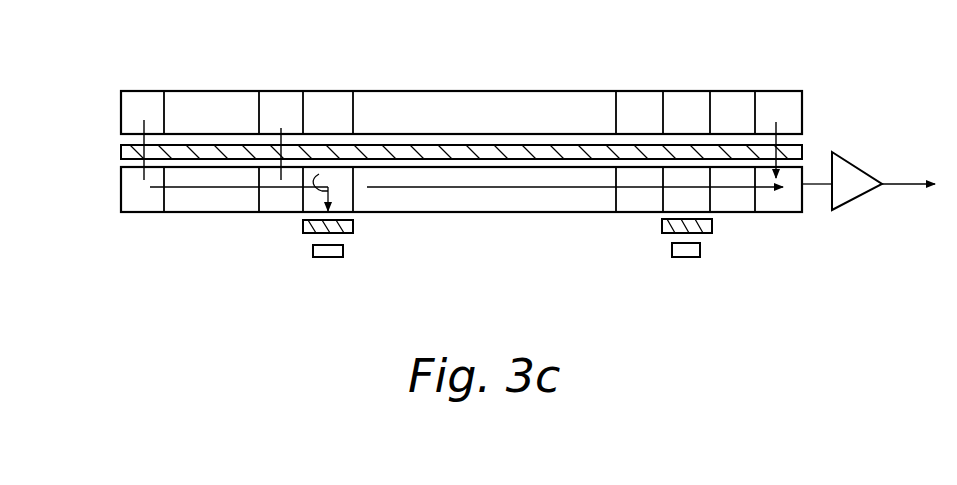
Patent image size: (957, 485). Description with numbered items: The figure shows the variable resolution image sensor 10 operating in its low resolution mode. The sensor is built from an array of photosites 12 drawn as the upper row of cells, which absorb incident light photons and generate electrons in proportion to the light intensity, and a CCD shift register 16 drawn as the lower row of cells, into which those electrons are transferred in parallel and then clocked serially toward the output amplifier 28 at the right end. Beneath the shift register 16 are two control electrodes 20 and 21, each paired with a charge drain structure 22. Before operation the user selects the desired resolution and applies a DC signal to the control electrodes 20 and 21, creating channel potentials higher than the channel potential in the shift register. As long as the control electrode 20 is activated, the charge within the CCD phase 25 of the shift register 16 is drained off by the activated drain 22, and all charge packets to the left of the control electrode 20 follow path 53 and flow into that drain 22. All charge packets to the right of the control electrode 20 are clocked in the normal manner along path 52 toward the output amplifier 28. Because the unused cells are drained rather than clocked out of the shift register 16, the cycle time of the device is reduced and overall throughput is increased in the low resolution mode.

The variable resolution image sensor 10 is at (870, 122).
The array of photosites 12 is at (471, 91).
The CCD shift register 16 is at (120, 201).
The control electrode 20 is at (355, 225).
The control electrode 21 is at (712, 224).
The charge drain structure 22 is at (333, 257).
The CCD phase 25 is at (305, 199).
The output amplifier 28 is at (850, 185).
The path 52 is at (557, 188).
The path 53 is at (200, 188).